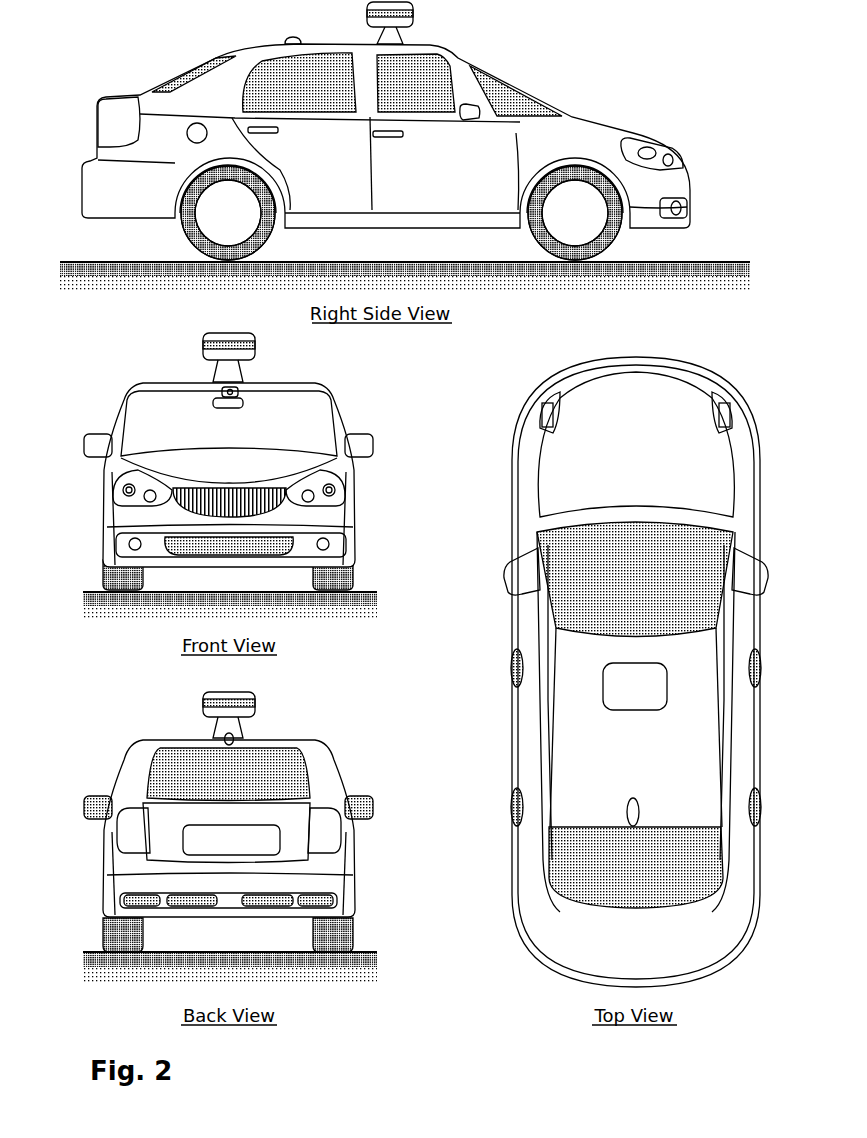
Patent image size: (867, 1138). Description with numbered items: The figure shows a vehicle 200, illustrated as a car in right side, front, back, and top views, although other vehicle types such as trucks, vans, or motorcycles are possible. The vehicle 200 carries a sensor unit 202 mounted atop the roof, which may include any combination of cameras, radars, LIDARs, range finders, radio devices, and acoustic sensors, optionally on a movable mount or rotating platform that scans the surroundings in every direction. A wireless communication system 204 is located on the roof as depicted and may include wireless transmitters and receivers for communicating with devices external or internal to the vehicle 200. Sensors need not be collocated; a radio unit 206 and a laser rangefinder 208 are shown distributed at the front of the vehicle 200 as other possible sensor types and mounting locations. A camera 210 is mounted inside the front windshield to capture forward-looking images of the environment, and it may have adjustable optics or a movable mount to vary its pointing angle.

The vehicle 200 is at (70, 83).
The sensor unit 202 is at (413, 20).
The wireless communication system 204 is at (291, 37).
The radio unit 206 is at (692, 206).
The laser rangefinder 208 is at (704, 150).
The camera 210 is at (240, 392).